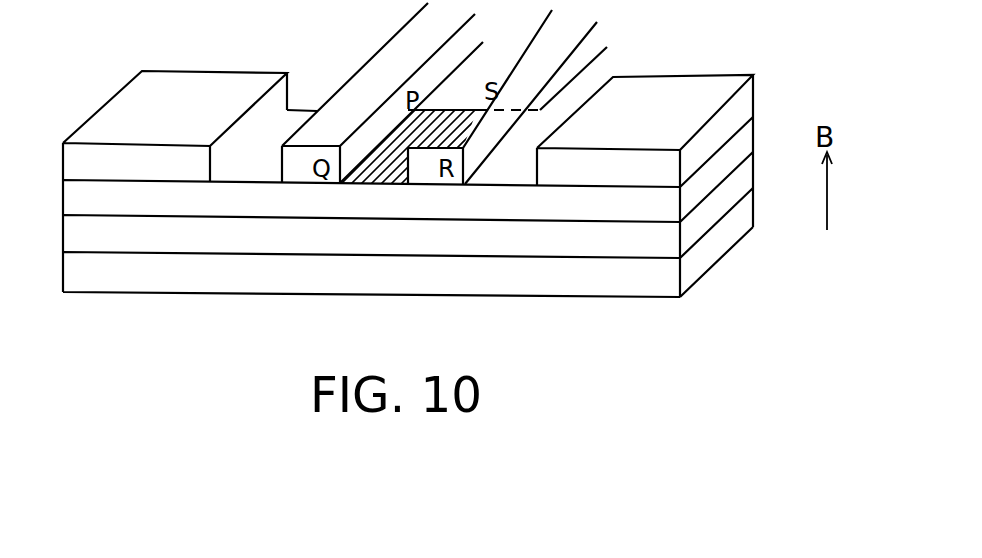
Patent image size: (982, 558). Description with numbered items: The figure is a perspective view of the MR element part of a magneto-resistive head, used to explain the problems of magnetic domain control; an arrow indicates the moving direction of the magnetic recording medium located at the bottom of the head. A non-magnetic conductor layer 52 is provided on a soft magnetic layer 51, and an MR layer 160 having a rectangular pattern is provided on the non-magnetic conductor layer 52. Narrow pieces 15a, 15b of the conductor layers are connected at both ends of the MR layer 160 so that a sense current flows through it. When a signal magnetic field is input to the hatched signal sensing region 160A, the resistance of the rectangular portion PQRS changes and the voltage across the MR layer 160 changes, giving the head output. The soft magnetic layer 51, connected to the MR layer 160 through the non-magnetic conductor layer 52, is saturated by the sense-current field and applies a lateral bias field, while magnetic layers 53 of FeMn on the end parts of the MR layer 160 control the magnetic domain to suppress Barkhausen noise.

The soft magnetic layer 51 is at (705, 253).
The non-magnetic conductor layer 52 is at (742, 180).
The MR layer 160 is at (743, 140).
The signal sensing region 160A is at (398, 124).
The magnetic layers for controlling the magnetic domain 53 is at (160, 88).
The narrow piece of the conductor layer 15a is at (340, 115).
The narrow piece of the conductor layer 15b is at (548, 88).